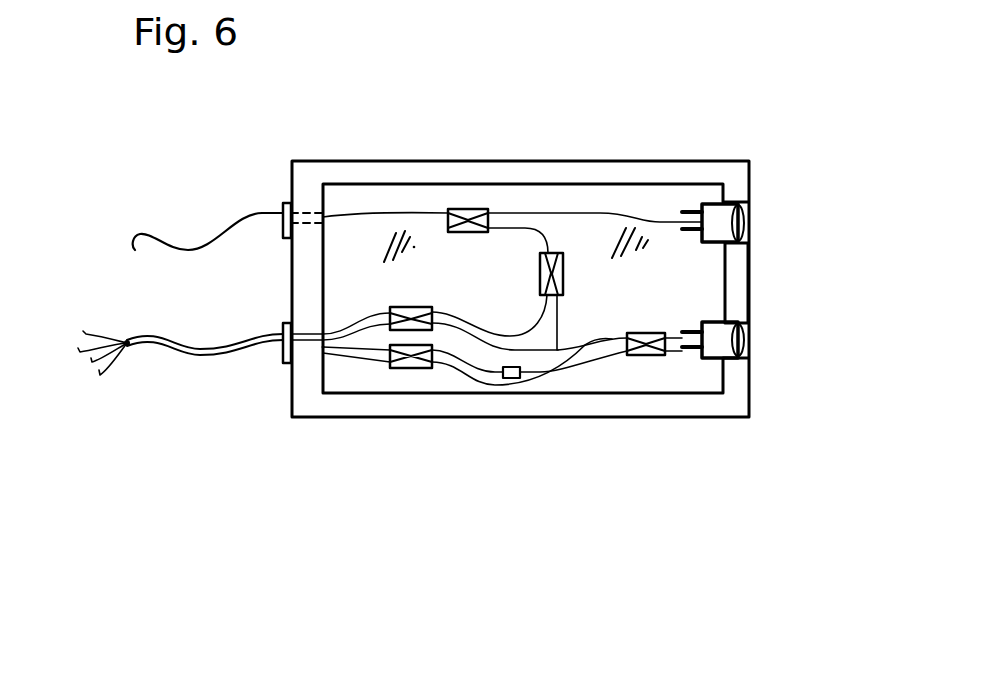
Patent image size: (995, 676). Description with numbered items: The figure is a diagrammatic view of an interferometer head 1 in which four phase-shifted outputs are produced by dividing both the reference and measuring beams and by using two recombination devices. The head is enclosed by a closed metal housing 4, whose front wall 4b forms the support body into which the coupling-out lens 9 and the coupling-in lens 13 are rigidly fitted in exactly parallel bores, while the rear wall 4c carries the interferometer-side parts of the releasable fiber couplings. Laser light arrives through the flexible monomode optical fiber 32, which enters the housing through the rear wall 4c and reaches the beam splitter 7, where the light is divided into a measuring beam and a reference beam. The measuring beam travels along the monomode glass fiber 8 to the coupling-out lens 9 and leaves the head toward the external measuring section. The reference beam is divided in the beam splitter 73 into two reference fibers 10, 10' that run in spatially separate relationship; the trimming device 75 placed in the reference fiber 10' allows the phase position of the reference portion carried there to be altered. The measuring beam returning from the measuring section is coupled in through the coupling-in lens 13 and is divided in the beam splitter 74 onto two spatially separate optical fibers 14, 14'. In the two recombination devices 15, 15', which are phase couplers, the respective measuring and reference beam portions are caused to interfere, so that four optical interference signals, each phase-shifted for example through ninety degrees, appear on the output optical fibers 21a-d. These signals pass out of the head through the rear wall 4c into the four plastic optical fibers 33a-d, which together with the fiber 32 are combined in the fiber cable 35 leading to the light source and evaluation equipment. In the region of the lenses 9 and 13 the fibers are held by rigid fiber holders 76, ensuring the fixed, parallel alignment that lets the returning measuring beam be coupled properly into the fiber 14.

The interferometer head 1 is at (372, 140).
The housing 4 is at (626, 405).
The front wall 4b is at (740, 290).
The rear wall 4c is at (298, 270).
The beam splitter 7 is at (468, 207).
The monomode glass fiber 8 is at (622, 217).
The coupling-out lens 9 is at (745, 220).
The reference fiber 10 is at (476, 193).
The reference fiber 10' is at (529, 454).
The coupling-in lens 13 is at (746, 342).
The optical fiber 14 is at (529, 404).
The optical fiber 14' is at (522, 450).
The recombination device 15 is at (382, 432).
The recombination device 15' is at (411, 427).
The output optical fibers 21a-d is at (350, 368).
The flexible monomode optical fiber 32 is at (188, 245).
The plastic optical fibers 33a-d is at (114, 372).
The fiber cable 35 is at (198, 362).
The beam splitter 73 is at (553, 253).
The beam splitter 74 is at (655, 356).
The trimming device 75 is at (516, 380).
The rigid fiber holders 76 is at (714, 360).